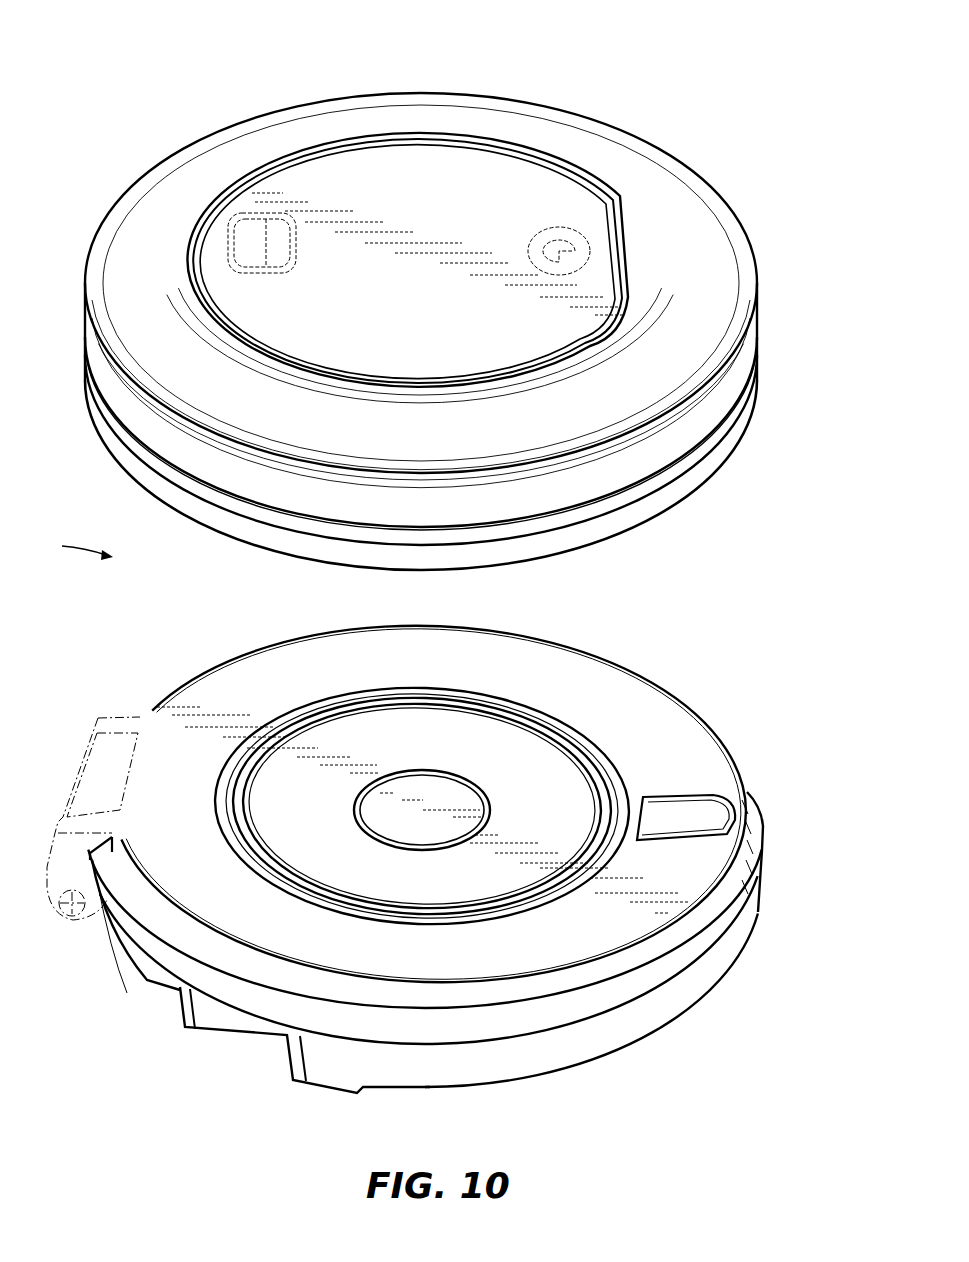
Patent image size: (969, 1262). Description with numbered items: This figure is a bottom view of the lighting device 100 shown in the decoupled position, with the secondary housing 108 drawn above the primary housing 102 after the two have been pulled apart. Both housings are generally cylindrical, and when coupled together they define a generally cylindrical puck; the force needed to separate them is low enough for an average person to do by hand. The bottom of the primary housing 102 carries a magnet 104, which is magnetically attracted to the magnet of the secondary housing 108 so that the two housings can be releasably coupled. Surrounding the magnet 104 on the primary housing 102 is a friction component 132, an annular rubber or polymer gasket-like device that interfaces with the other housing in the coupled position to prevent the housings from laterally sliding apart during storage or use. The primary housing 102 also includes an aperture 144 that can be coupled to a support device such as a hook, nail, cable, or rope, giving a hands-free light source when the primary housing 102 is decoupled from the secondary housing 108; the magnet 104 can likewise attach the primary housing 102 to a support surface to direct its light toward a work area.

The lighting device 100 is at (140, 53).
The secondary housing 108 is at (713, 202).
The primary housing 102 is at (762, 722).
The magnet 104 is at (393, 817).
The friction component 132 is at (512, 878).
The aperture 144 is at (693, 823).